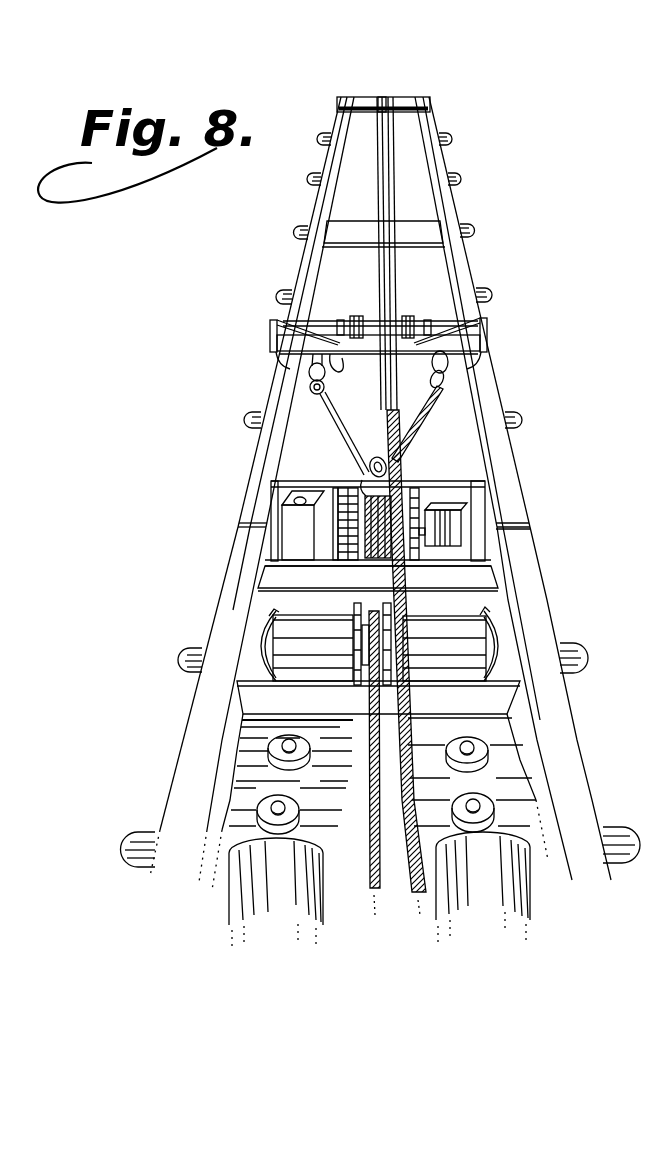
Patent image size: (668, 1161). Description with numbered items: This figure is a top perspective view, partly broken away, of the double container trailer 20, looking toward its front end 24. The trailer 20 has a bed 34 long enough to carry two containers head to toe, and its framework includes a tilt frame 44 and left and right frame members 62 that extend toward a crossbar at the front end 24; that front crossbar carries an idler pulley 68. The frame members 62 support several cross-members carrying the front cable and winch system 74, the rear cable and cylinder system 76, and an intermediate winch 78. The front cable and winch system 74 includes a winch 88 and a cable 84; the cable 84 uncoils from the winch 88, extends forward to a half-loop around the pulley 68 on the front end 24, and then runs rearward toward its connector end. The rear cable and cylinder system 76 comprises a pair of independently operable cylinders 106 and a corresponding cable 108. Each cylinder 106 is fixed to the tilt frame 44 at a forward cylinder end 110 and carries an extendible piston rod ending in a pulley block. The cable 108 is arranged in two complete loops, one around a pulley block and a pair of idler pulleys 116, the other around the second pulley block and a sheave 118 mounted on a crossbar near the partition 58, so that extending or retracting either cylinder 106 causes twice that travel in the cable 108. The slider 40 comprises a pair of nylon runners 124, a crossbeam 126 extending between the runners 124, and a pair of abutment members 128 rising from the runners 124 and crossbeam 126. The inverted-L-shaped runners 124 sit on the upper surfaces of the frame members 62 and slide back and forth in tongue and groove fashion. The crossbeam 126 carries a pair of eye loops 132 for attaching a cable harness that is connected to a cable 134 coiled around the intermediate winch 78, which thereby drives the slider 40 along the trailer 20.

The double container trailer 20 is at (484, 194).
The front end 24 is at (412, 97).
The bed 34 is at (319, 201).
The slider 40 is at (495, 318).
The tilt frame 44 is at (545, 620).
The partition 58 is at (520, 531).
The left and right frame members 62 is at (228, 594).
The idler pulley 68 is at (383, 95).
The front cable and winch system 74 is at (330, 304).
The rear cable and cylinder system 76 is at (246, 797).
The intermediate winch 78 is at (421, 492).
The cable 84 is at (392, 204).
The winch 88 is at (373, 316).
The cylinders 106 is at (537, 911).
The cable 108 is at (371, 862).
The forward cylinder end 110 is at (297, 816).
The idler pulleys 116 is at (289, 735).
The sheave 118 is at (354, 606).
The runners 124 is at (285, 356).
The crossbeam 126 is at (377, 358).
The abutment members 128 is at (270, 337).
The eye loops 132 is at (329, 391).
The cable 134 is at (356, 505).